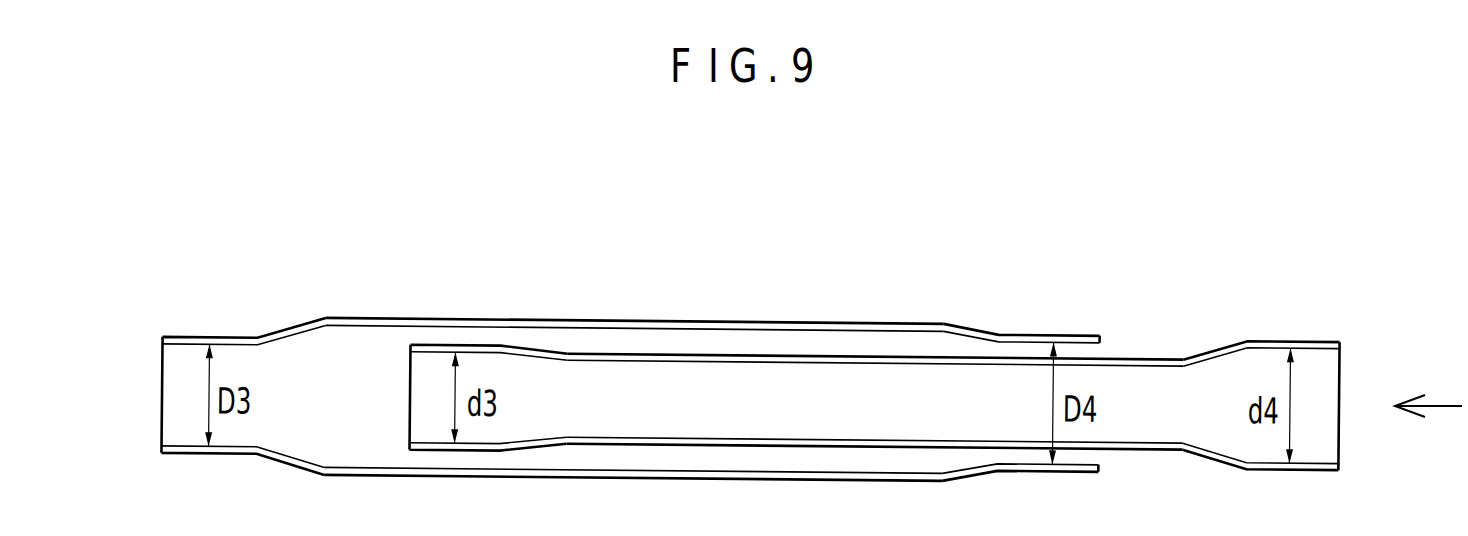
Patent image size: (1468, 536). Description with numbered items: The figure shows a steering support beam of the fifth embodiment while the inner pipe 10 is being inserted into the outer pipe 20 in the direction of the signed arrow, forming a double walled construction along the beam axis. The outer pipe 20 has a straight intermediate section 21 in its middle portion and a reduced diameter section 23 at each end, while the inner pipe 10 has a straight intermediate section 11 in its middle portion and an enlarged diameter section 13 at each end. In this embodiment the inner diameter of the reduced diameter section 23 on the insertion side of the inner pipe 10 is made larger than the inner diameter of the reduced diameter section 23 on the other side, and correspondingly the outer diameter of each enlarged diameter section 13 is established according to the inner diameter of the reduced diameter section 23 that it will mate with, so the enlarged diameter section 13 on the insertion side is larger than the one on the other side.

The inner pipe 10 is at (703, 354).
The intermediate section 11 is at (875, 353).
The enlarged diameter section 13 is at (432, 345).
The outer pipe 20 is at (624, 320).
The intermediate section 21 is at (785, 321).
The reduced diameter section 23 is at (213, 337).